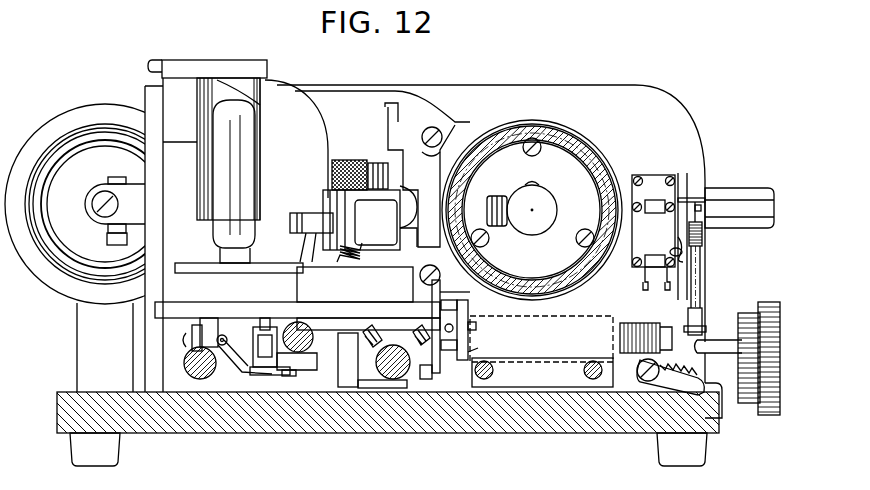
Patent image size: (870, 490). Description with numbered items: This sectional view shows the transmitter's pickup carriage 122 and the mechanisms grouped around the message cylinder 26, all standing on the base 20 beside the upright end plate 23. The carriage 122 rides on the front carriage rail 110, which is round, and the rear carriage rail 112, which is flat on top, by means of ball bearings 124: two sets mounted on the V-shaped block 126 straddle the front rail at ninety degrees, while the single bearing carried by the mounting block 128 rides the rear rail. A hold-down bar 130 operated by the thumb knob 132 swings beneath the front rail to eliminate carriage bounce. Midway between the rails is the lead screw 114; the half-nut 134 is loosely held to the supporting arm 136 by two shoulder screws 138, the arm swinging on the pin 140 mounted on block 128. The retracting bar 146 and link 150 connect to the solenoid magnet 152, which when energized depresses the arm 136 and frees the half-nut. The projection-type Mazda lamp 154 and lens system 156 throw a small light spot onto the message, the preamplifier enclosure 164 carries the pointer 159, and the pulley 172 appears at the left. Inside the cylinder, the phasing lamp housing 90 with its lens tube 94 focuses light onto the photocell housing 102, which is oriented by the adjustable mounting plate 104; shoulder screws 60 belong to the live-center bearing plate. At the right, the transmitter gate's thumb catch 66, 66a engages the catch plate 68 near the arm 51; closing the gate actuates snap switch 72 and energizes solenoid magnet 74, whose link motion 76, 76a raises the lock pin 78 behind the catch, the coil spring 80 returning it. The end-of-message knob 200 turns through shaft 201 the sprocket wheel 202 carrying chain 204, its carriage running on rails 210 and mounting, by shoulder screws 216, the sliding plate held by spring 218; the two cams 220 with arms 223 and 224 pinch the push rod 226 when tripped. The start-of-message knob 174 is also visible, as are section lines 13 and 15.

The base 20 is at (278, 418).
The upright end plate 23 is at (680, 112).
The pointer 159 is at (358, 88).
The enclosure 164 is at (209, 66).
The projection-type Mazda lamp 154 is at (222, 243).
The pulley 172 is at (60, 290).
The message cylinder 26 is at (536, 290).
The phasing lamp housing 90 is at (560, 210).
The tube 94 is at (497, 194).
The shoulder screws 60 is at (543, 153).
The adjustable photocell mounting plate 104 is at (447, 125).
The photocell housing 102 is at (390, 158).
The thumb knob 132 is at (331, 175).
The solenoid magnet 152 is at (390, 231).
The lens system 156 is at (410, 226).
The pickup carriage 122 is at (362, 300).
The mounting block 128 is at (208, 324).
The pin 140 is at (222, 334).
The supporting arm 136 is at (248, 381).
The ball bearings 124 is at (190, 331).
The rear carriage rail 112 is at (190, 372).
The retracting bar 146 is at (263, 360).
The shoulder screws 138 is at (288, 374).
The link 150 is at (268, 330).
The lead screw 114 is at (298, 322).
The half-nut 134 is at (292, 350).
The V-shaped block 126 is at (375, 318).
The push rod 226 is at (432, 318).
The front carriage rail 110 is at (383, 376).
The hold-down bar 130 is at (400, 388).
The shoulder screws 216 is at (422, 368).
The section line 13 is at (456, 255).
The section line 15 is at (462, 279).
The protruding arm 223 is at (462, 270).
The cams 220 is at (445, 305).
The spring 218 is at (478, 326).
The protruding arm 224 is at (478, 356).
The chain 204 is at (552, 320).
The sprocket wheel 202 is at (560, 300).
The rails 210 is at (493, 375).
The snap switch 72 is at (660, 240).
The arm 51 is at (755, 192).
The thumb catch 66 is at (742, 208).
The thumb catch 66a is at (698, 203).
The catch plate 68 is at (680, 196).
The lock pin 78 is at (704, 265).
The coil spring 80 is at (704, 300).
The solenoid magnet 74 is at (628, 325).
The link motion 76 is at (637, 380).
The link motion 76a is at (726, 405).
The shaft 201 is at (726, 338).
The knob 200 is at (750, 312).
The knob 174 is at (772, 416).